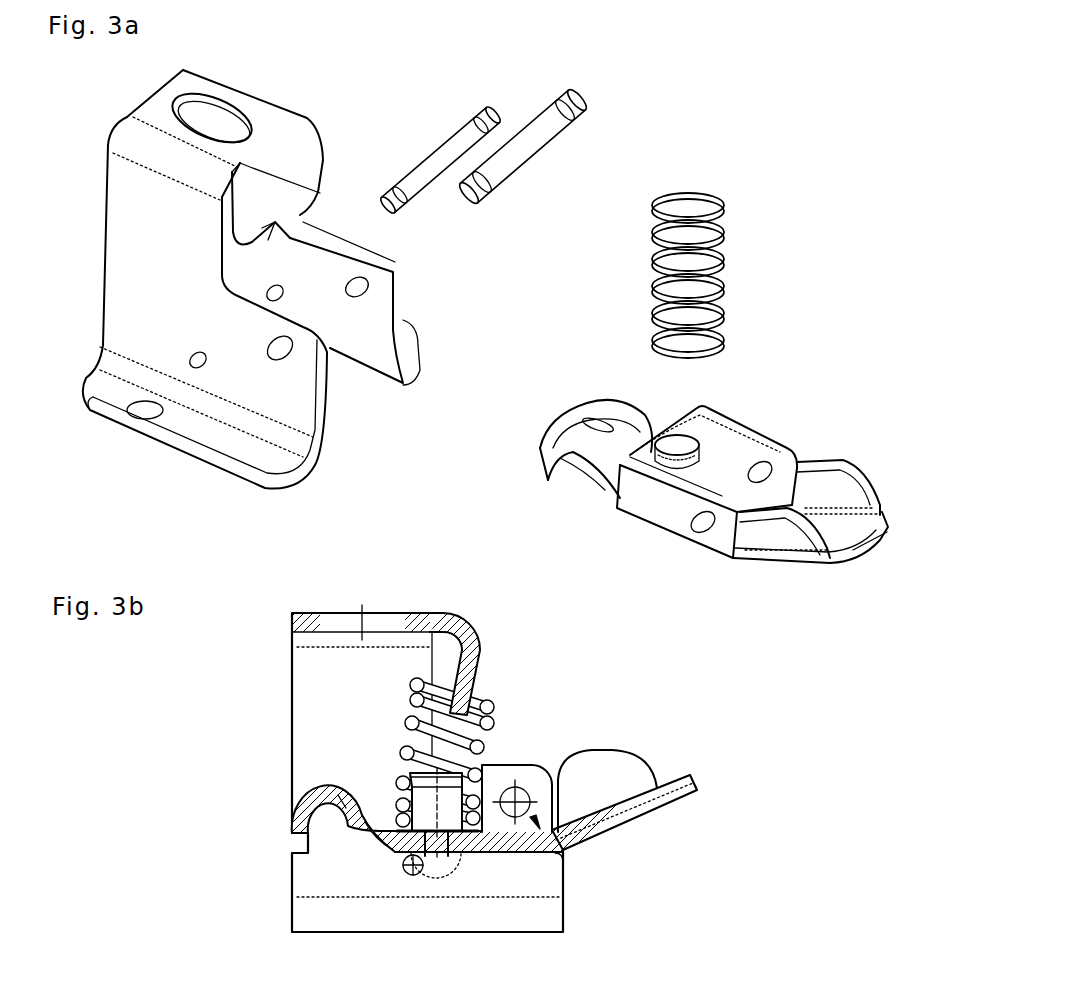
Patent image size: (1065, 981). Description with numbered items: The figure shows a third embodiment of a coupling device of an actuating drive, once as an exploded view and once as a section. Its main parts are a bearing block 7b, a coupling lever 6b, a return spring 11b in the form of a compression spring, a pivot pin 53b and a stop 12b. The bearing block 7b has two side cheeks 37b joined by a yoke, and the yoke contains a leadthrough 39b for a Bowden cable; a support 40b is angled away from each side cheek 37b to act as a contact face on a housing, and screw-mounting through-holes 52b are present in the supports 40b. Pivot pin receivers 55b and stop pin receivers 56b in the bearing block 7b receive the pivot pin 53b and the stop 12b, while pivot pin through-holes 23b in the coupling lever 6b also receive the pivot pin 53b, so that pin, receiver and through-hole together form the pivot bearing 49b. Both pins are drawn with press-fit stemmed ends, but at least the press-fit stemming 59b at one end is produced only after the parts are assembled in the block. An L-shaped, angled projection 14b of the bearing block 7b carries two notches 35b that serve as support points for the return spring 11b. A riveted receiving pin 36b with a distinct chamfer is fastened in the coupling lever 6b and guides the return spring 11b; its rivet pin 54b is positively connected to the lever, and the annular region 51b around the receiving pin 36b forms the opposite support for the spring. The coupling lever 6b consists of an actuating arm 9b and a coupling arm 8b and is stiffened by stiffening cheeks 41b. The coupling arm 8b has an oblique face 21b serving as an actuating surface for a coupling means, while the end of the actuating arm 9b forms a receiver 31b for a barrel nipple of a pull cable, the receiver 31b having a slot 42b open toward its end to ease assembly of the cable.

In FIG. 3A, the bearing block 7b is at (260, 274).
In FIG. 3B, the bearing block 7b is at (431, 608).
In FIG. 3A, the leadthrough 39b is at (200, 110).
In FIG. 3A, the projection 14b is at (290, 203).
In FIG. 3B, the projection 14b is at (460, 673).
In FIG. 3A, the notches 35b is at (260, 230).
In FIG. 3A, the side cheeks 37b is at (137, 280).
In FIG. 3A, the support 40b is at (213, 443).
In FIG. 3A, the screw-mounting through-holes 52b is at (140, 413).
In FIG. 3A, the pivot pin receivers 55b is at (290, 357).
In FIG. 3A, the stop pin receivers 56b is at (203, 367).
In FIG. 3A, the press-fit stemming 59b is at (490, 107).
In FIG. 3A, the stop 12b is at (531, 135).
In FIG. 3B, the stop 12b is at (413, 875).
In FIG. 3A, the pivot pin 53b is at (570, 87).
In FIG. 3A, the return spring 11b is at (720, 217).
In FIG. 3B, the return spring 11b is at (490, 707).
In FIG. 3A, the coupling lever 6b is at (696, 476).
In FIG. 3B, the coupling lever 6b is at (416, 783).
In FIG. 3A, the slot 42b is at (590, 420).
In FIG. 3B, the slot 42b is at (300, 823).
In FIG. 3A, the receiving pin 36b is at (677, 445).
In FIG. 3B, the receiving pin 36b is at (420, 800).
In FIG. 3A, the stiffening cheeks 41b is at (847, 483).
In FIG. 3B, the stiffening cheeks 41b is at (623, 767).
In FIG. 3A, the actuating arm 9b is at (538, 465).
In FIG. 3B, the actuating arm 9b is at (373, 847).
In FIG. 3A, the receiver 31b is at (573, 465).
In FIG. 3B, the receiver 31b is at (342, 805).
In FIG. 3A, the pivot pin through-holes 23b is at (698, 530).
In FIG. 3A, the coupling arm 8b is at (852, 528).
In FIG. 3B, the coupling arm 8b is at (673, 790).
In FIG. 3A, the oblique face 21b is at (853, 565).
In FIG. 3B, the oblique face 21b is at (677, 800).
In FIG. 3B, the annular region 51b is at (465, 835).
In FIG. 3B, the pivot bearing 49b is at (567, 853).
In FIG. 3B, the rivet pin 54b is at (447, 850).